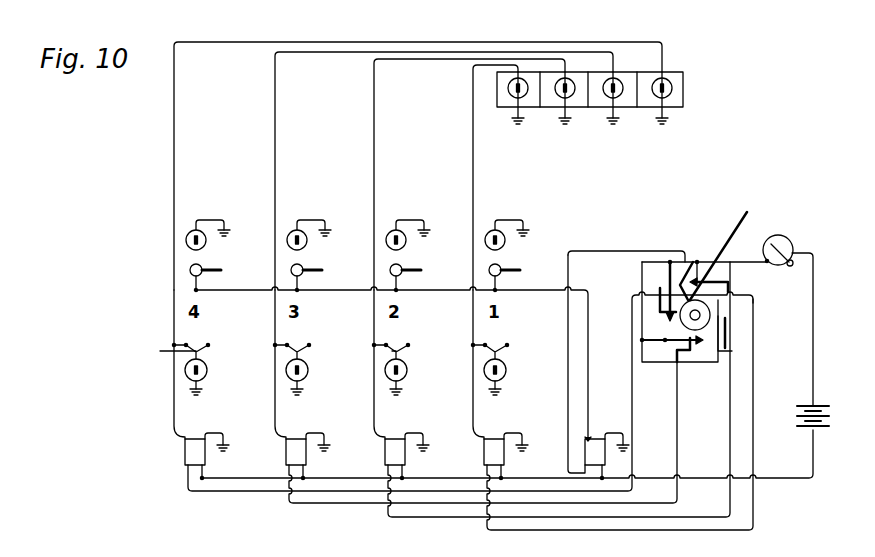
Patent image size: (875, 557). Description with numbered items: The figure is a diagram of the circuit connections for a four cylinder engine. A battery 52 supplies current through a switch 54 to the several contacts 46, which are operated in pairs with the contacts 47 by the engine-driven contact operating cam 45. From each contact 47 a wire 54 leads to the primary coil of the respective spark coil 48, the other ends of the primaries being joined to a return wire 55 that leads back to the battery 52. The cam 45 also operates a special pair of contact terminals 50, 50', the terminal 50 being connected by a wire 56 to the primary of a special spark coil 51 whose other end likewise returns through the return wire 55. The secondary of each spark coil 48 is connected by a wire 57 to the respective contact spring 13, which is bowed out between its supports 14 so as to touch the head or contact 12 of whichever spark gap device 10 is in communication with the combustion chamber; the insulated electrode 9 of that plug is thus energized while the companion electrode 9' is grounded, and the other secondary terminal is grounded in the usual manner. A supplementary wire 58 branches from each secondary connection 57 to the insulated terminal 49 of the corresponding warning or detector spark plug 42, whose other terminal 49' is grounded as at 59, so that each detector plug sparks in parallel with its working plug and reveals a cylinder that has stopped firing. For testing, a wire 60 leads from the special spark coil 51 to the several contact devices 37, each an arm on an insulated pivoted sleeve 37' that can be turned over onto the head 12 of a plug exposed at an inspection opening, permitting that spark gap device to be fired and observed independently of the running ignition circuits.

The sparking electrode 9 is at (208, 377).
The grounded sparking electrode 9' is at (217, 390).
The plug 10 is at (513, 372).
The head or contact 12 is at (285, 352).
The contact spring 13 is at (498, 343).
The support 14 is at (296, 343).
The contact device 37 is at (384, 278).
The pivoted sleeve 37' is at (181, 278).
The detector spark plug 42 is at (655, 103).
The contact operating cam 45 is at (682, 320).
The contact 46 is at (668, 346).
The contact 47 is at (740, 262).
The spark coil 48 is at (484, 460).
The insulated terminal 49 is at (611, 86).
The grounded terminal 49' is at (709, 100).
The contact terminal 50 is at (693, 265).
The contact terminal 50' is at (722, 248).
The special spark coil 51 is at (585, 460).
The battery 52 is at (832, 418).
The wire 54 is at (790, 245).
The return wire 55 is at (783, 480).
The wire 56 is at (568, 396).
The wire 57 is at (473, 410).
The supplementary wire 58 is at (485, 175).
The ground 59 is at (670, 121).
The wire 60 is at (596, 351).